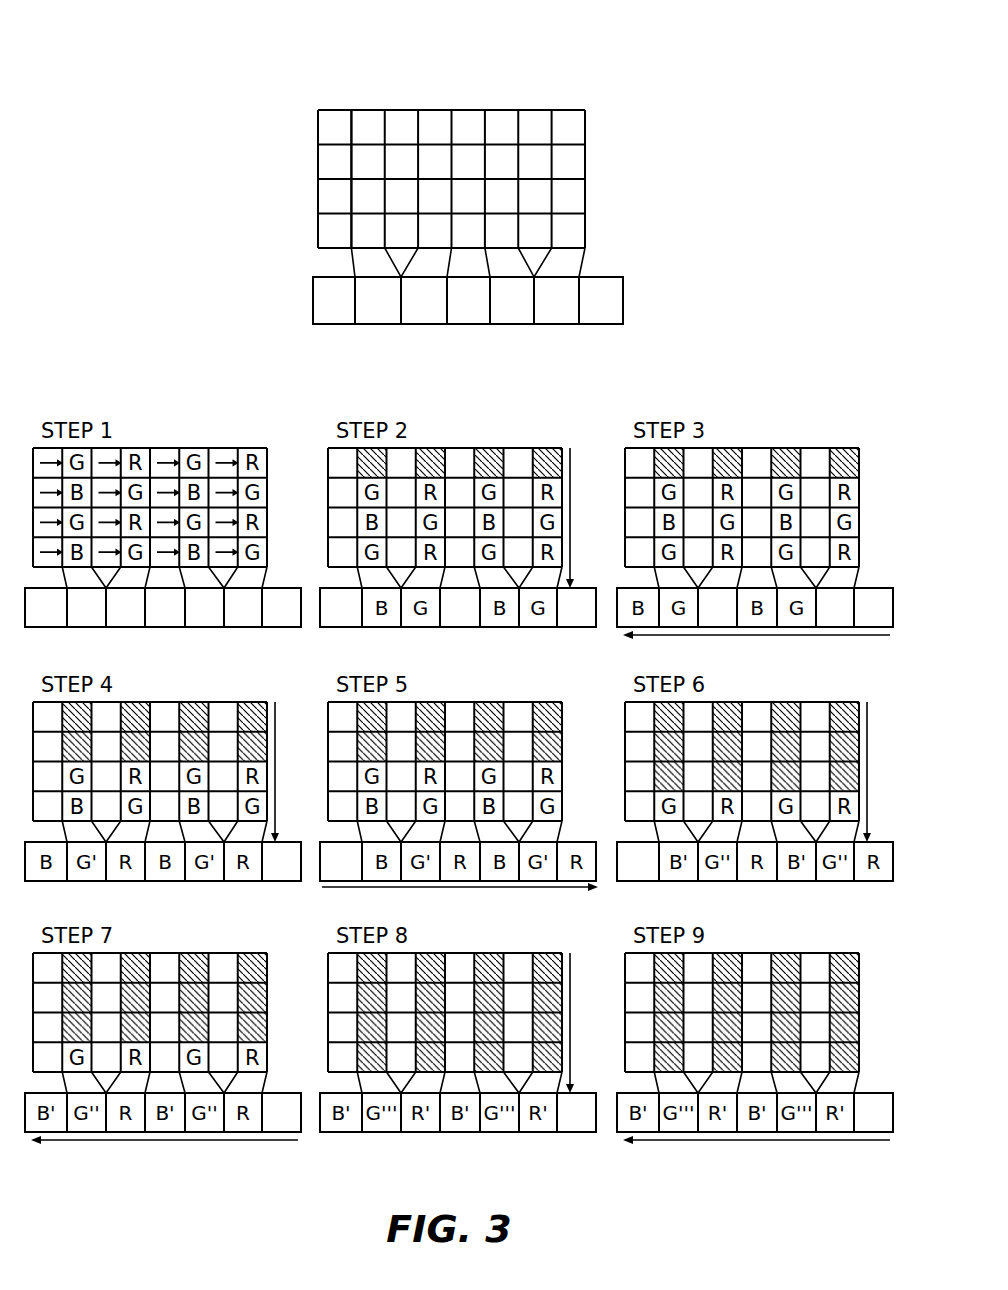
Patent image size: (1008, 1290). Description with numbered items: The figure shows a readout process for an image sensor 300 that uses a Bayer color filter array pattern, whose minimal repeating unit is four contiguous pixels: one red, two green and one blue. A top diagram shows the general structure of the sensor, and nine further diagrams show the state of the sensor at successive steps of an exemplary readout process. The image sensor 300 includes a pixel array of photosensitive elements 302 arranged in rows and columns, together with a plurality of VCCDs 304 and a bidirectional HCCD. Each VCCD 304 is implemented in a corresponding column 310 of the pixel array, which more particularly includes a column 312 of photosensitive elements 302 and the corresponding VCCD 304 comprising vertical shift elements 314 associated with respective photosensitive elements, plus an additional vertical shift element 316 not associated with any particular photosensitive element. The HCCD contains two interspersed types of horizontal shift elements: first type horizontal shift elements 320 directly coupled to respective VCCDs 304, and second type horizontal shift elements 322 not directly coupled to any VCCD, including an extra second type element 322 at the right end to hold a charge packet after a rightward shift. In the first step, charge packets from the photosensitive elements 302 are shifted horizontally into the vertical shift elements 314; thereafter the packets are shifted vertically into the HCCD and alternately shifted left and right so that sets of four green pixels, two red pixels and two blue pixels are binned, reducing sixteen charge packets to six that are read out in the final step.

The image sensor 300 is at (553, 93).
The photosensitive elements 302 is at (318, 120).
The VCCDs 304 is at (313, 282).
The column of the pixel array 310 is at (318, 45).
The column of photosensitive elements 312 is at (352, 103).
The vertical shift elements 314 is at (585, 120).
The additional vertical shift element 316 is at (583, 264).
The first type horizontal shift elements 320 is at (377, 326).
The second type horizontal shift elements 322 is at (465, 326).